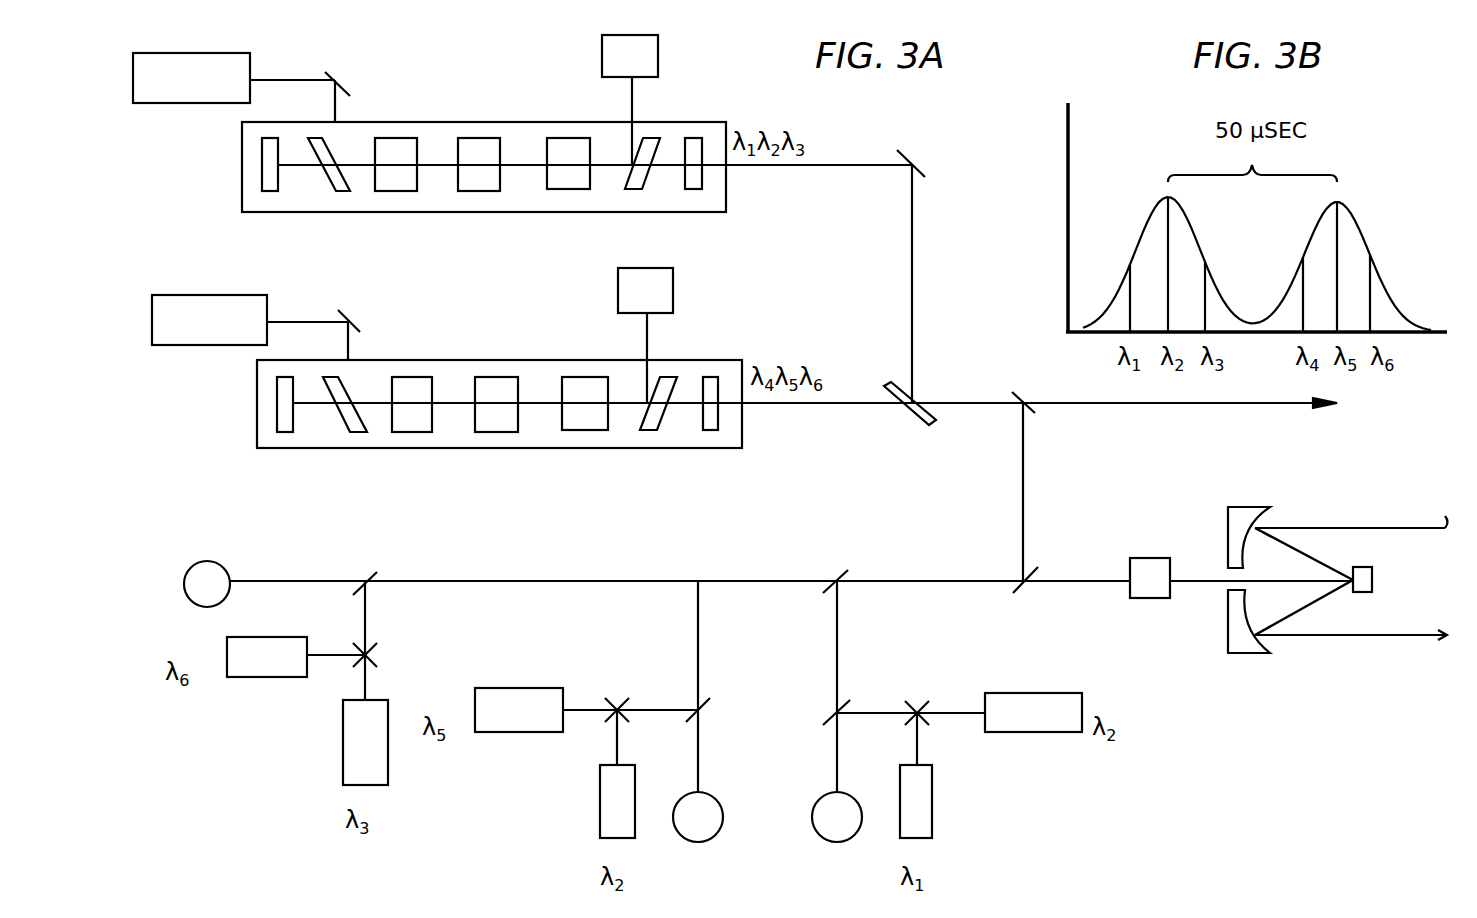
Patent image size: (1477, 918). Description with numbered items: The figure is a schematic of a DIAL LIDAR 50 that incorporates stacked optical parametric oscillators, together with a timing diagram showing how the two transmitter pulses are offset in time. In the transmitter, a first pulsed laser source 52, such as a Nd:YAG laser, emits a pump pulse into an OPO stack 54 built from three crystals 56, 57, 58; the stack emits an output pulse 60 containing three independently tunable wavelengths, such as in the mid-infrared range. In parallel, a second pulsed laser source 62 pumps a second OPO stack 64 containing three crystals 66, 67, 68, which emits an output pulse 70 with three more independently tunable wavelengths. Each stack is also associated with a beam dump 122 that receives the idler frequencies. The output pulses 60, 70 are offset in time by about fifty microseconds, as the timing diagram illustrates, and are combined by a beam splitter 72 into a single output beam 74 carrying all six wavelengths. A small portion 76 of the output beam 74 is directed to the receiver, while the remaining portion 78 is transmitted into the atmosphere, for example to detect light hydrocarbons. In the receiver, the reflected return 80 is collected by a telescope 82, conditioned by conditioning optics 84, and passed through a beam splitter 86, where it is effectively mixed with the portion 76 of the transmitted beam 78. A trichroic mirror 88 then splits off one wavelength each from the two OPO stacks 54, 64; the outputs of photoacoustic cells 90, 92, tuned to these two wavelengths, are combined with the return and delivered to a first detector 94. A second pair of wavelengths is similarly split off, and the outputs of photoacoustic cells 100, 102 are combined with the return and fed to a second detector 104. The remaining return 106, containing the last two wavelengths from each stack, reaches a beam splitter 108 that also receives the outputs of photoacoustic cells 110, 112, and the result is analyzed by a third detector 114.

The DIAL LIDAR 50 is at (498, 108).
The first pulsed laser source 52 is at (180, 103).
The OPO stack 54 is at (405, 122).
The crystal 56 is at (395, 191).
The crystal 57 is at (482, 191).
The crystal 58 is at (568, 189).
The output pulse 60 is at (878, 147).
The second pulsed laser source 62 is at (232, 295).
The second OPO stack 64 is at (452, 360).
The crystal 66 is at (412, 432).
The crystal 67 is at (497, 432).
The crystal 68 is at (592, 430).
The output pulse 70 is at (868, 401).
The beam splitter 72 is at (930, 424).
The single output beam 74 is at (953, 401).
The small portion 76 is at (1026, 515).
The remaining portion 78 is at (1172, 404).
The return 80 is at (1380, 528).
The telescope 82 is at (1258, 655).
The conditioning optics 84 is at (1152, 598).
The beam splitter 86 is at (1030, 590).
The trichroic mirror 88 is at (840, 568).
The photoacoustic cell 90 is at (932, 797).
The photoacoustic cell 92 is at (1040, 732).
The first detector 94 is at (818, 800).
The photoacoustic cell 100 is at (600, 780).
The photoacoustic cell 102 is at (520, 732).
The second detector 104 is at (720, 833).
The remaining return 106 is at (528, 580).
The beam splitter 108 is at (365, 578).
The photoacoustic cell 110 is at (343, 742).
The photoacoustic cell 112 is at (252, 677).
The third detector 114 is at (224, 568).
The beam dump 122 is at (658, 55).